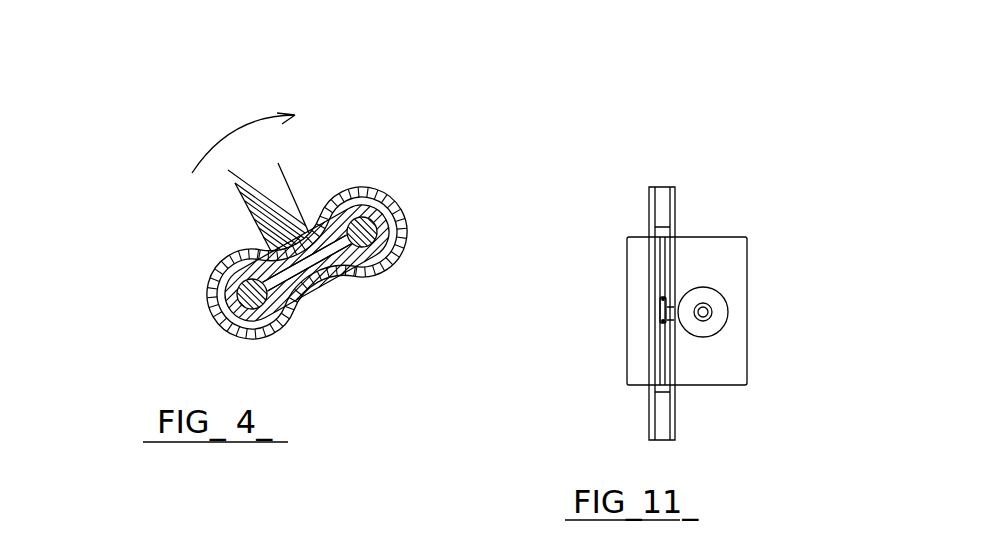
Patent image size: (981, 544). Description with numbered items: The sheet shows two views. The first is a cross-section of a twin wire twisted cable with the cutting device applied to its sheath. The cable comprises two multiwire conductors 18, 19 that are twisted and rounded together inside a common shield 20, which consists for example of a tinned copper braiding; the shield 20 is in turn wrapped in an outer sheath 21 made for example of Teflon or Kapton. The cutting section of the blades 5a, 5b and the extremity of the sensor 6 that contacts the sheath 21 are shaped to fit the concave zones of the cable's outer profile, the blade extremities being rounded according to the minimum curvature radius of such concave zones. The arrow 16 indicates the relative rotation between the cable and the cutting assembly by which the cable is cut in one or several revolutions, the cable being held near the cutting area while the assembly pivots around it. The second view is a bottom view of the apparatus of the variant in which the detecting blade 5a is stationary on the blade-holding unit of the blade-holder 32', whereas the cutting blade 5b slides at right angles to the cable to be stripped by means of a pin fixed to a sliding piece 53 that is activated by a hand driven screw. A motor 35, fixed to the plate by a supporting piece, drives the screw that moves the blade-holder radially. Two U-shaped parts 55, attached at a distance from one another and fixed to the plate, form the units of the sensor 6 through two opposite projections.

In FIG. 4, the detecting blade 5a is at (309, 226).
In FIG. 11, the detecting blade 5a is at (663, 324).
In FIG. 4, the cutting blade 5b is at (338, 154).
In FIG. 11, the cutting blade 5b is at (673, 324).
In FIG. 4, the sensor 6 is at (252, 216).
In FIG. 4, the arrow 16 is at (213, 152).
In FIG. 4, the multiwire conductor 18 is at (245, 293).
In FIG. 4, the multiwire conductor 19 is at (383, 193).
In FIG. 4, the common shield 20 is at (209, 306).
In FIG. 4, the outer sheath 21 is at (209, 277).
In FIG. 11, the U-shaped parts 55 is at (649, 203).
In FIG. 11, the blade-holder 32' is at (749, 295).
In FIG. 11, the motor 35 is at (710, 307).
In FIG. 11, the sliding piece 53 is at (728, 323).